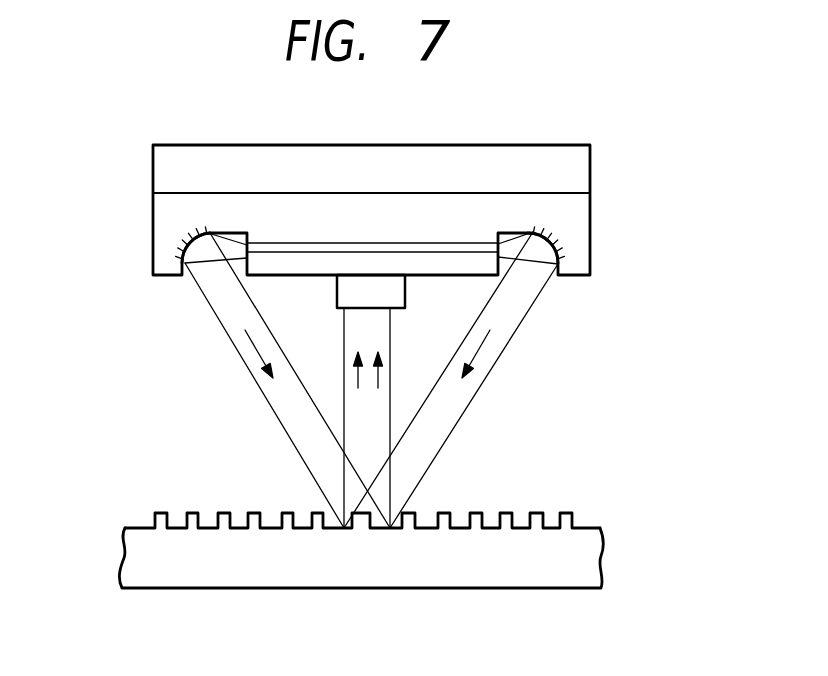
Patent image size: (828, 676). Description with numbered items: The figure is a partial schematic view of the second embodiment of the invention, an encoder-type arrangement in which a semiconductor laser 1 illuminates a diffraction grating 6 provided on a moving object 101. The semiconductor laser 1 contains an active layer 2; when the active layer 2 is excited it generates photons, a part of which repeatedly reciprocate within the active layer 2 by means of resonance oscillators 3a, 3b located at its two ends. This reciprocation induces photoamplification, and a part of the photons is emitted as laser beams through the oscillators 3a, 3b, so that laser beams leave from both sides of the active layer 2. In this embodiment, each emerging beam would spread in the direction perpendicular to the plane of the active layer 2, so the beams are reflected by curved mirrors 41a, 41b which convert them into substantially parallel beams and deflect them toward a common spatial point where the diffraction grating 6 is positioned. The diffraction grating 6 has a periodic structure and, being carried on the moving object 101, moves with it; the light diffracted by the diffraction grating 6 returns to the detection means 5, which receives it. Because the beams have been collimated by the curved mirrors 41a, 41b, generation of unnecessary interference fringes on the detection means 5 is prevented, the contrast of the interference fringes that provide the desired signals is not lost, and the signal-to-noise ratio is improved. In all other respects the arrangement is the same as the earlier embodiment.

The semiconductor laser 1 is at (590, 166).
The active layer 2 is at (407, 245).
The resonance oscillator 3a is at (538, 288).
The resonance oscillator 3b is at (240, 263).
The curved mirror 41a is at (553, 242).
The curved mirror 41b is at (185, 245).
The detection means 5 is at (392, 293).
The diffraction grating 6 is at (573, 520).
The moving object 101 is at (587, 560).